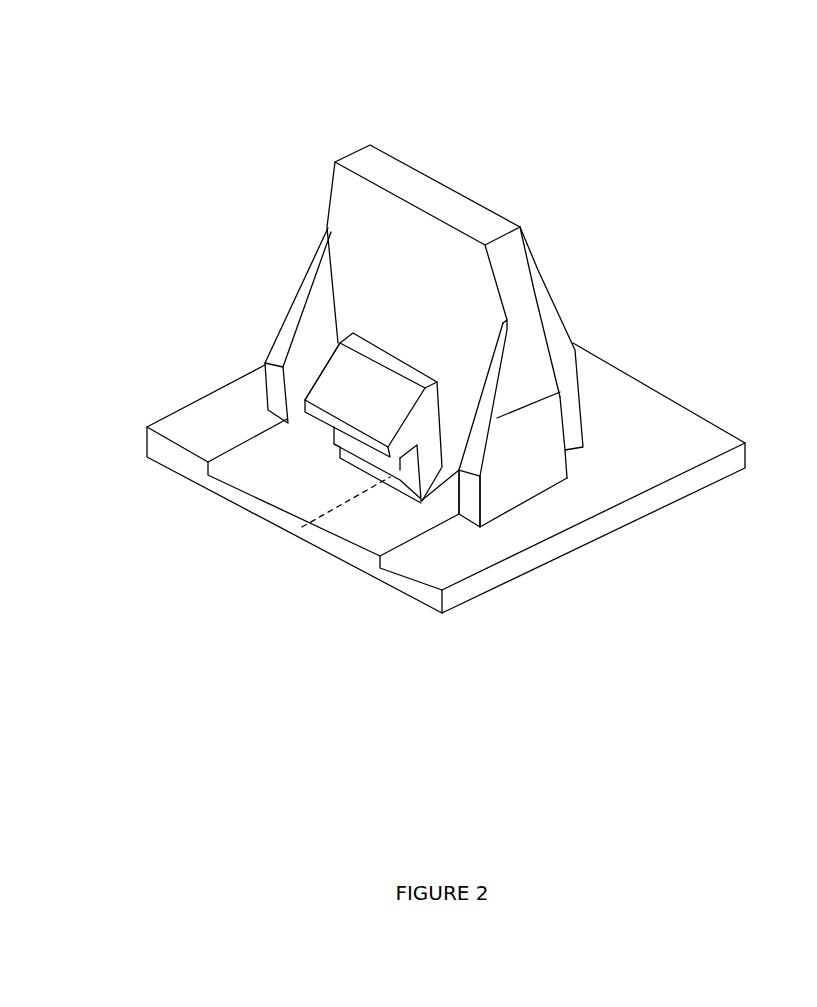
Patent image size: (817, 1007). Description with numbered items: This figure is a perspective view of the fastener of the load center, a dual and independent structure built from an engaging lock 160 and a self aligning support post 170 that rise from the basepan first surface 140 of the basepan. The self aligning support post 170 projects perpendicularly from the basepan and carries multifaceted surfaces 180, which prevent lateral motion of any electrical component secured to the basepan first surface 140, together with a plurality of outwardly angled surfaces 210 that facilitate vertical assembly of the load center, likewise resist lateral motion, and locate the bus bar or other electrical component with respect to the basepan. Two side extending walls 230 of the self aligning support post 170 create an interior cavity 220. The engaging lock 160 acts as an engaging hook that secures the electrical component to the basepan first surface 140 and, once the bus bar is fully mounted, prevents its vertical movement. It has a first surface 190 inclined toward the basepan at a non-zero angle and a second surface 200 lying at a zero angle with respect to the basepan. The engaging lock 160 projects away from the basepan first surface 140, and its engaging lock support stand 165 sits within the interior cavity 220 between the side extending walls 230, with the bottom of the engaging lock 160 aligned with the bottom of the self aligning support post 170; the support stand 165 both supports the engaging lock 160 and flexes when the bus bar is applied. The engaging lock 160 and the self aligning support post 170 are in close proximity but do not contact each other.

The basepan first surface 140 is at (473, 544).
The engaging lock 160 is at (315, 388).
The engaging lock support stand 165 is at (302, 527).
The self aligning support post 170 is at (537, 279).
The multifaceted surfaces 180 is at (538, 430).
The first surface 190 is at (357, 395).
The second surface 200 is at (400, 453).
The outwardly angled surfaces 210 is at (297, 285).
The interior cavity 220 is at (385, 240).
The side extending walls 230 is at (533, 468).